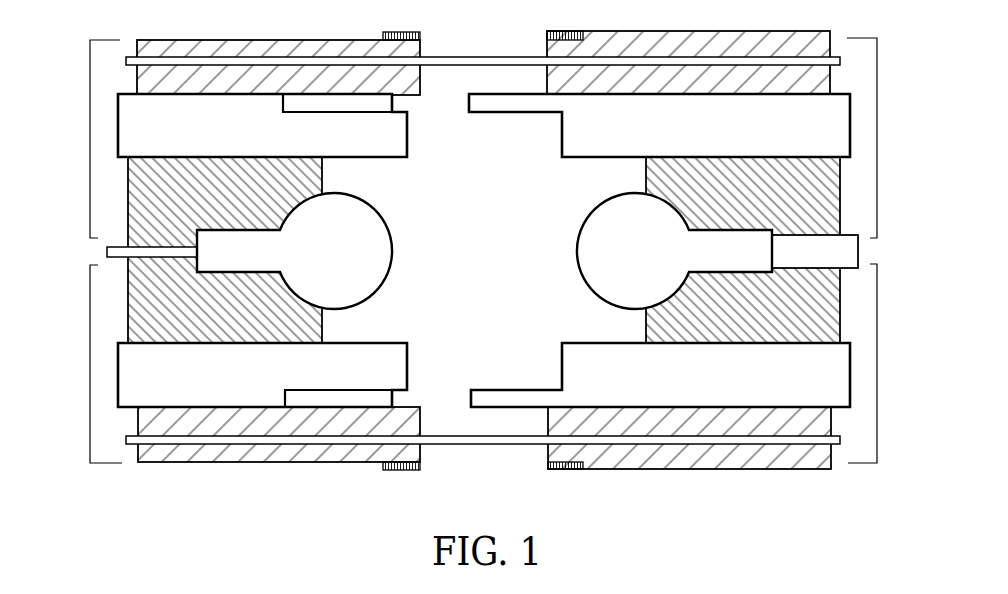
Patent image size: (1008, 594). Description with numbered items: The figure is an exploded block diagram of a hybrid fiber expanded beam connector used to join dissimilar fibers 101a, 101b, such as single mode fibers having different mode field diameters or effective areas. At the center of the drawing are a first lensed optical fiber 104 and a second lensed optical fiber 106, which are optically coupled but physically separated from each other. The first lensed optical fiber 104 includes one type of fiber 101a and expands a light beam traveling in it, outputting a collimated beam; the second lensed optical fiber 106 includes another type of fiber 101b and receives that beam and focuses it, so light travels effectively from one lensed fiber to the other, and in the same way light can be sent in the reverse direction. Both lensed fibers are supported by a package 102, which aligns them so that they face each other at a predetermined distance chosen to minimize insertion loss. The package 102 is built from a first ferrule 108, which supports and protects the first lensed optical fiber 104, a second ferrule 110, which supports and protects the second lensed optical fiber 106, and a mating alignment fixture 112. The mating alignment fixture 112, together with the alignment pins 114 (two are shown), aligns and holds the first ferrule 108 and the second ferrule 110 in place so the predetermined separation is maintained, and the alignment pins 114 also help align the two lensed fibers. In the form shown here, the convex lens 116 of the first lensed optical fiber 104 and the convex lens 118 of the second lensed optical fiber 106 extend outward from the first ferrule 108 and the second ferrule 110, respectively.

The fiber 101a is at (107, 251).
The fiber 101b is at (862, 250).
The package 102 is at (91, 140).
The first lensed optical fiber 104 is at (378, 207).
The second lensed optical fiber 106 is at (590, 289).
The first ferrule 108 is at (323, 327).
The second ferrule 110 is at (646, 328).
The mating alignment fixture 112 is at (427, 128).
The alignment pins 114 is at (482, 55).
The convex lens 116 is at (348, 261).
The convex lens 118 is at (650, 261).